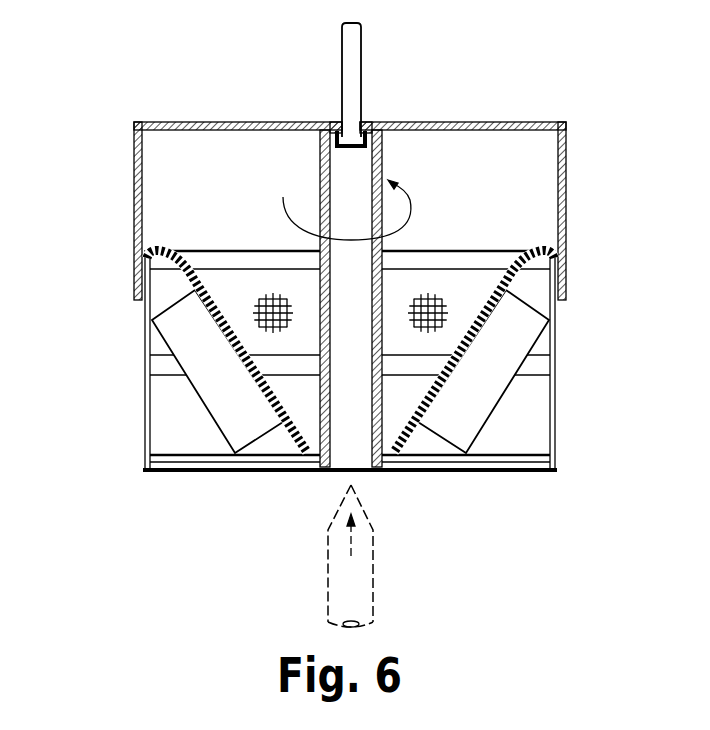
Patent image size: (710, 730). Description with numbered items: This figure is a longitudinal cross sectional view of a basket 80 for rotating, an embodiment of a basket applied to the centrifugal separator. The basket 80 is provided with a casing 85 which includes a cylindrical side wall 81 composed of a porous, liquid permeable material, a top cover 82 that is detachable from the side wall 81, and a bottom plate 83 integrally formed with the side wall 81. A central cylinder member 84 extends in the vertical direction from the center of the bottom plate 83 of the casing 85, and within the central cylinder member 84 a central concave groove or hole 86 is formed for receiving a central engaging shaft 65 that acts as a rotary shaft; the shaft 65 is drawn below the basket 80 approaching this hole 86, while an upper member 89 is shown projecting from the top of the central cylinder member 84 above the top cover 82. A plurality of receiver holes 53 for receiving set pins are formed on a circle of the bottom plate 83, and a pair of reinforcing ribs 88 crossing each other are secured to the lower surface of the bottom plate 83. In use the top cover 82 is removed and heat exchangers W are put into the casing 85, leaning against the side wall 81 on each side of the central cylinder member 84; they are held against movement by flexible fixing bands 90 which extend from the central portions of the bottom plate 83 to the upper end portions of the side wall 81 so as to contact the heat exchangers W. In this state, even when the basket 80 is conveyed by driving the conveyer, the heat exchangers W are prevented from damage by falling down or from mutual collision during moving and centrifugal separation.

The basket 80 is at (338, 274).
The top cover 82 is at (566, 140).
The casing 85 is at (126, 172).
The drive shaft 89 is at (361, 49).
The flexible fixing bands 90 is at (145, 257).
The cylindrical side wall 81 is at (558, 330).
The heat exchangers W is at (205, 383).
The bottom plate 83 is at (220, 456).
The receiver holes 53 is at (430, 458).
The central cylinder member 84 is at (382, 420).
The central concave groove or hole 86 is at (339, 418).
The reinforcing ribs 88 is at (155, 470).
The central engaging shaft 65 is at (382, 571).